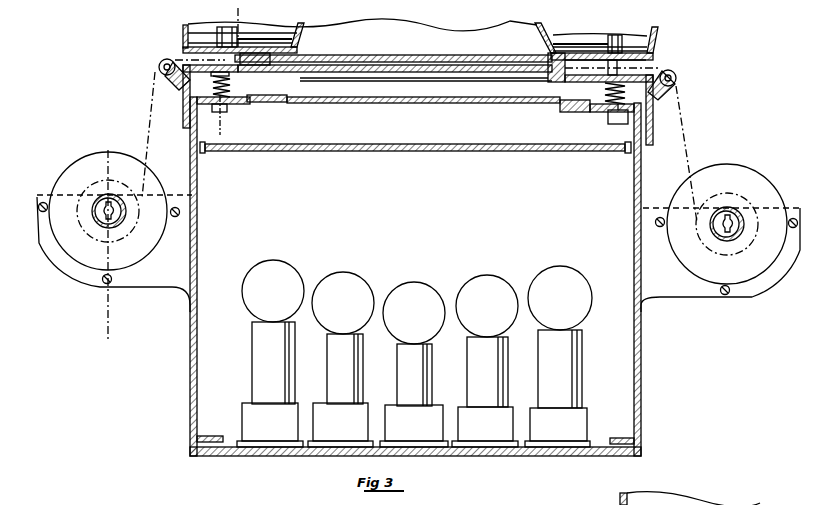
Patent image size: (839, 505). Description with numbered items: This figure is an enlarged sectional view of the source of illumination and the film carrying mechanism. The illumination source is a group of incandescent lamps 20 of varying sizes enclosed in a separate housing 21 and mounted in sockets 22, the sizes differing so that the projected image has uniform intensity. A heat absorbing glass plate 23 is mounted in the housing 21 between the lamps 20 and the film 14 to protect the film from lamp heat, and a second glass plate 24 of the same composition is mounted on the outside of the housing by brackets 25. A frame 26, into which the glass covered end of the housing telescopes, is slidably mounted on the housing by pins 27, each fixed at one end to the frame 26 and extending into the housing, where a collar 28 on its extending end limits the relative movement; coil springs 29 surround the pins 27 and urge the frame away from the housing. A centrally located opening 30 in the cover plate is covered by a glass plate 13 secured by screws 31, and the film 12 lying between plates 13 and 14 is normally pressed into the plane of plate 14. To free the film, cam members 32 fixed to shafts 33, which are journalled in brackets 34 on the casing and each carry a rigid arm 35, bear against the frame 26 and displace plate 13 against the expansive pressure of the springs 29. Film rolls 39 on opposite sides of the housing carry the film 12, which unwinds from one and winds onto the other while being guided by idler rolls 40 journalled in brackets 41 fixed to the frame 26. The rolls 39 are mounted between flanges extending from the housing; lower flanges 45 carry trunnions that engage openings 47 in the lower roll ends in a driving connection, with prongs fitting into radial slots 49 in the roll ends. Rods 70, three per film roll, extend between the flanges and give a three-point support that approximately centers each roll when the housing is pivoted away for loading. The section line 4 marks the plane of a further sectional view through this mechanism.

The section line 4- 4 is at (238, 11).
The film 12 is at (148, 135).
The glass plate 13 is at (428, 62).
The film plate 14 is at (446, 62).
The incandescent lamps 20 is at (410, 300).
The housing 21 is at (641, 360).
The sockets 22 is at (255, 413).
The heat absorbing glass plate 23 is at (384, 151).
The second glass plate 24 is at (337, 103).
The brackets 25 is at (264, 98).
The frame 26 is at (258, 72).
The pins 27 is at (231, 86).
The collar 28 is at (226, 113).
The coil springs 29 is at (610, 116).
The opening 30 is at (372, 62).
The screws 31 is at (296, 74).
The cam members 32 is at (246, 58).
The shafts 33 is at (588, 43).
The brackets 34 is at (188, 38).
The arm 35 is at (225, 28).
The film rolls 39 is at (138, 254).
The idler rolls 40 is at (158, 65).
The brackets 41 is at (180, 82).
The lower flanges 45 is at (72, 280).
The openings 47 is at (116, 212).
The radial slots 49 is at (118, 205).
The rods 70 is at (180, 213).